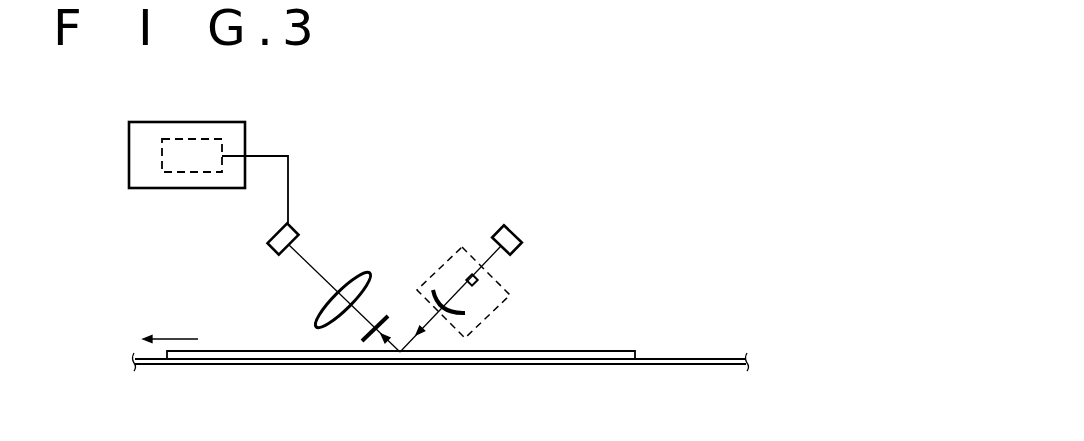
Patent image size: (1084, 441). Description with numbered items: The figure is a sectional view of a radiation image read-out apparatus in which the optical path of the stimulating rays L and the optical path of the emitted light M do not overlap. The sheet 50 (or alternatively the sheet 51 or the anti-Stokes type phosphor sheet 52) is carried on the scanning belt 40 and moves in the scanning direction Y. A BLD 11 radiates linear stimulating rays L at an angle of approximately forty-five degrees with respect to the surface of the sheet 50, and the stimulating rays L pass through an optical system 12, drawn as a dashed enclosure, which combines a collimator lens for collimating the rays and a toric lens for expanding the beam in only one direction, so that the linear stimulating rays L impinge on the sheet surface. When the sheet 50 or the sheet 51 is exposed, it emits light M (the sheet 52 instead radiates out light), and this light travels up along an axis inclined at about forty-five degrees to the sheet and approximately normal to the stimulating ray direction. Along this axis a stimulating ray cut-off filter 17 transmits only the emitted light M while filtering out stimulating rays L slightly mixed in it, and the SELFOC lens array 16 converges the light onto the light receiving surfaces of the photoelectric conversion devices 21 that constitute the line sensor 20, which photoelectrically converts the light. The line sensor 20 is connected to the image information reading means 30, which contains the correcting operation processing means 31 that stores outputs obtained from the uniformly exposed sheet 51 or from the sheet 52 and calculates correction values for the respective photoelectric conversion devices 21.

The BLD 11 is at (522, 234).
The optical system 12 is at (510, 294).
The SELFOC lens array 16 is at (353, 278).
The stimulating ray cut-off filter 17 is at (366, 344).
The line sensor 20 is at (280, 212).
The photoelectric conversion device 21 is at (300, 236).
The image information reading means 30 is at (187, 131).
The correcting operation processing means 31 is at (192, 155).
The scanning belt 40 is at (146, 366).
The sheet 50 is at (478, 337).
The sheet 51 is at (401, 355).
The phosphor sheet 52 is at (613, 351).
The stimulating rays L is at (428, 328).
The emitted light M is at (362, 316).
The scanning direction Y is at (170, 335).